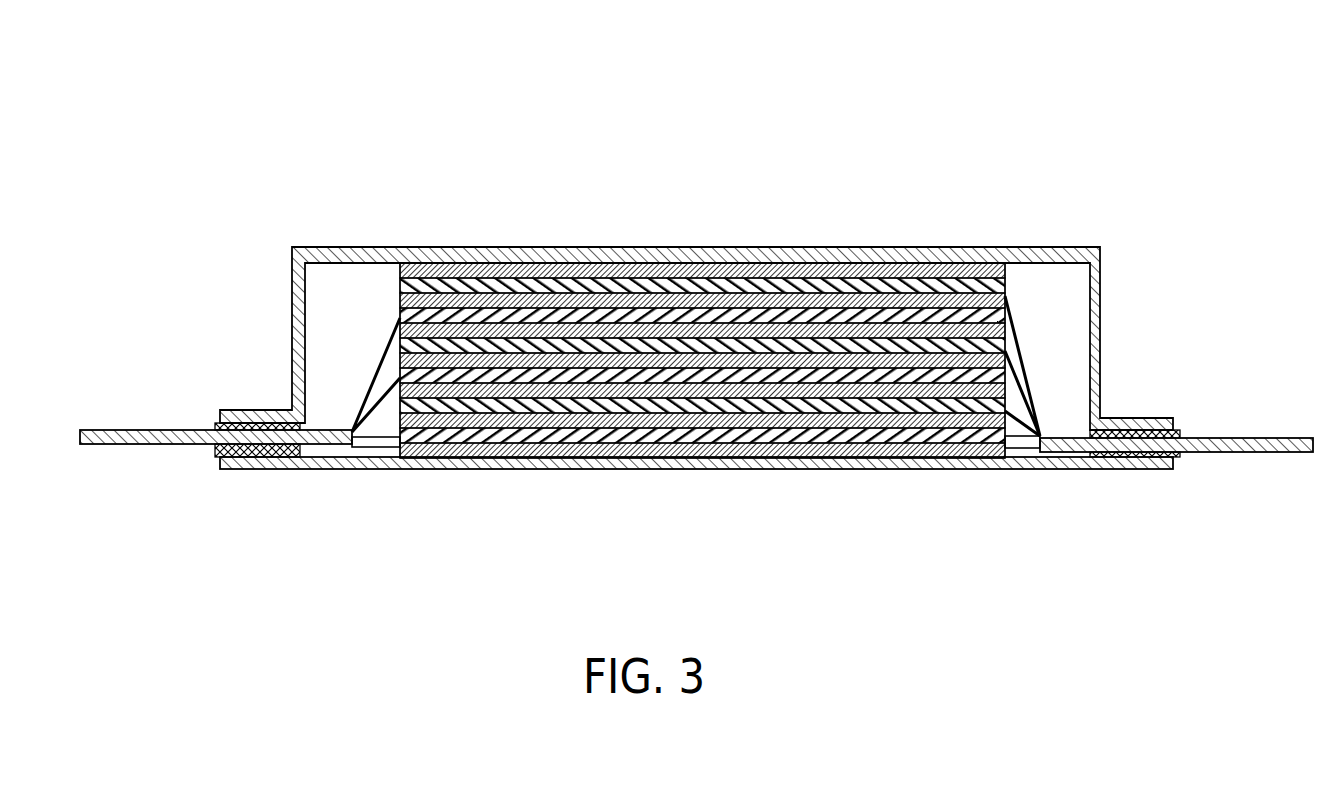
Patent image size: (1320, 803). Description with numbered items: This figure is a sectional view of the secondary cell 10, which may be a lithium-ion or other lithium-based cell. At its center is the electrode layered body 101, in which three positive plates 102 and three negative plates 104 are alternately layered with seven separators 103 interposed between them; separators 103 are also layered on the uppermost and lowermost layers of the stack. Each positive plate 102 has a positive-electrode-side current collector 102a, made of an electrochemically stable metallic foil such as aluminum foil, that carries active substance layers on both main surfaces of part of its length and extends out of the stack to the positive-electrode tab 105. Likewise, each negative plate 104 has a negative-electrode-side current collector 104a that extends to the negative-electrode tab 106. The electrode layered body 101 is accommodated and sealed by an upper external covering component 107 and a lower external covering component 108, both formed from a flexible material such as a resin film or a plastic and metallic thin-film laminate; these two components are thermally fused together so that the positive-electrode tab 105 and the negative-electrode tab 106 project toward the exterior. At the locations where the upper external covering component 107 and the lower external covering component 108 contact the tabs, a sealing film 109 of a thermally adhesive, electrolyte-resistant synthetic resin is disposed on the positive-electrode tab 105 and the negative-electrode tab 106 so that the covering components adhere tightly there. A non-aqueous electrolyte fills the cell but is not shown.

The secondary cell 10 is at (1148, 158).
The electrode layered body 101 is at (663, 247).
The positive plates 102 is at (958, 247).
The positive-electrode-side current collectors 102a is at (1030, 400).
The separators 103 is at (835, 247).
The negative plates 104 is at (577, 247).
The negative-electrode-side current collectors 104a is at (381, 335).
The positive-electrode tab 105 is at (1272, 438).
The negative-electrode tab 106 is at (103, 430).
The upper external covering component 107 is at (437, 247).
The lower external covering component 108 is at (430, 470).
The sealing film 109 is at (215, 427).